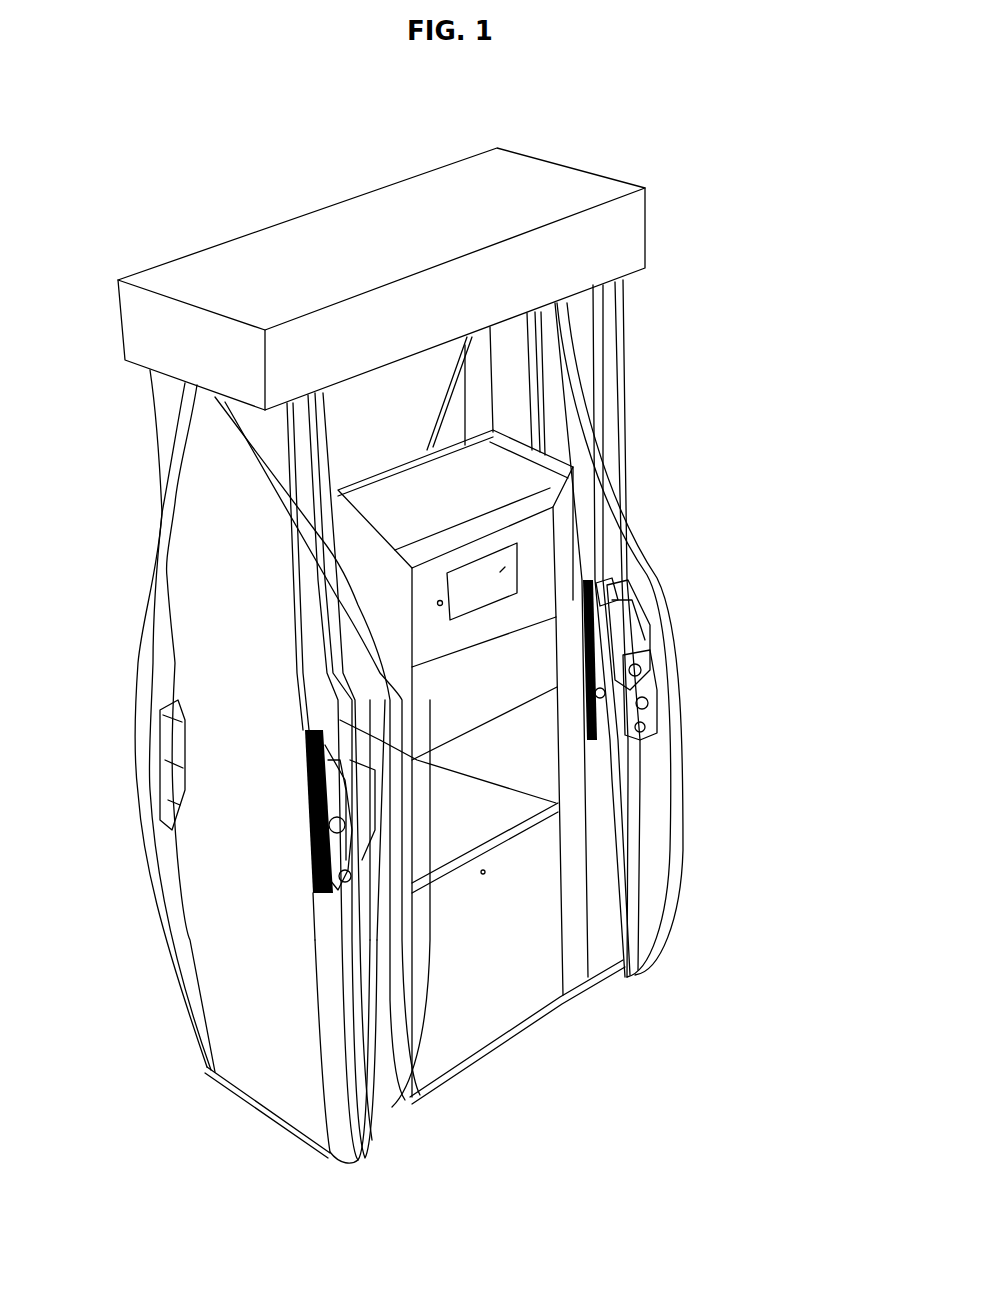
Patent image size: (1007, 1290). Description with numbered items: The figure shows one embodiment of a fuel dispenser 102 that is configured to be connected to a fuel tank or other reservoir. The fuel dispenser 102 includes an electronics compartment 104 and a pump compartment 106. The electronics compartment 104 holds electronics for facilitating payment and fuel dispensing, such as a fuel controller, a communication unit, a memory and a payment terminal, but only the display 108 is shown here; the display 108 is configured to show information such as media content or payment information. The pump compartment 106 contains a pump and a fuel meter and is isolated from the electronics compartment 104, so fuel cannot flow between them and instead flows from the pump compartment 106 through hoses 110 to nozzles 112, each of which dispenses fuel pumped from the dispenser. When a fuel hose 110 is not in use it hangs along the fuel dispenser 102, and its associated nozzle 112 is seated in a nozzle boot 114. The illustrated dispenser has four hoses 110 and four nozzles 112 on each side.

The fuel dispenser 102 is at (738, 168).
The electronics compartment 104 is at (400, 492).
The pump compartment 106 is at (483, 1013).
The display 108 is at (497, 580).
The hoses 110 is at (643, 490).
The nozzles 112 is at (650, 663).
The nozzle boot 114 is at (617, 577).